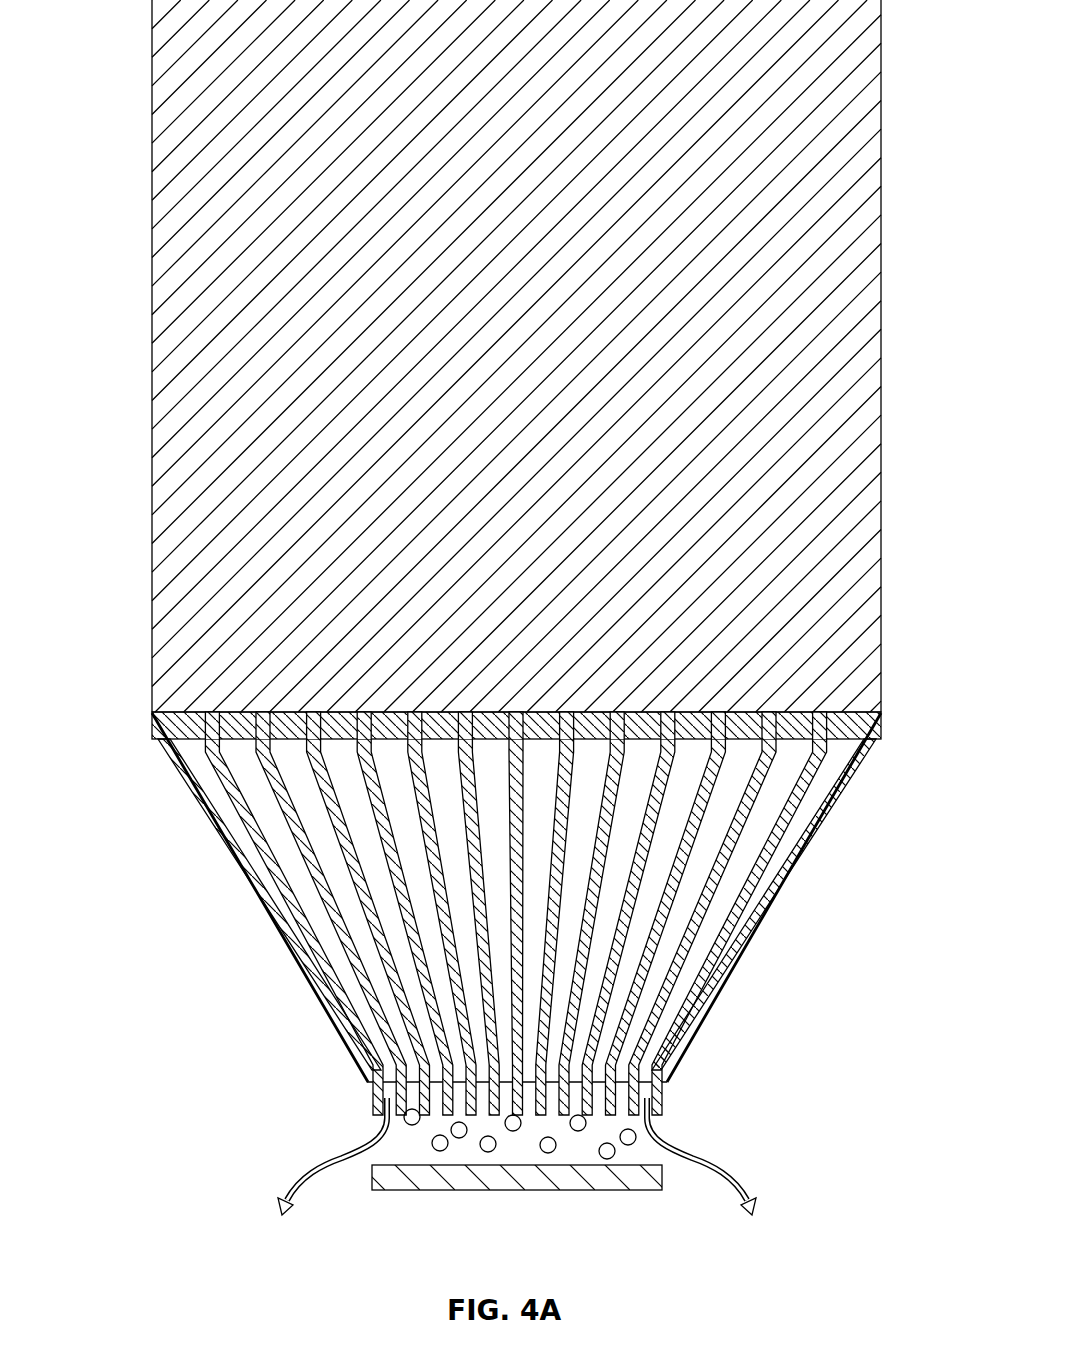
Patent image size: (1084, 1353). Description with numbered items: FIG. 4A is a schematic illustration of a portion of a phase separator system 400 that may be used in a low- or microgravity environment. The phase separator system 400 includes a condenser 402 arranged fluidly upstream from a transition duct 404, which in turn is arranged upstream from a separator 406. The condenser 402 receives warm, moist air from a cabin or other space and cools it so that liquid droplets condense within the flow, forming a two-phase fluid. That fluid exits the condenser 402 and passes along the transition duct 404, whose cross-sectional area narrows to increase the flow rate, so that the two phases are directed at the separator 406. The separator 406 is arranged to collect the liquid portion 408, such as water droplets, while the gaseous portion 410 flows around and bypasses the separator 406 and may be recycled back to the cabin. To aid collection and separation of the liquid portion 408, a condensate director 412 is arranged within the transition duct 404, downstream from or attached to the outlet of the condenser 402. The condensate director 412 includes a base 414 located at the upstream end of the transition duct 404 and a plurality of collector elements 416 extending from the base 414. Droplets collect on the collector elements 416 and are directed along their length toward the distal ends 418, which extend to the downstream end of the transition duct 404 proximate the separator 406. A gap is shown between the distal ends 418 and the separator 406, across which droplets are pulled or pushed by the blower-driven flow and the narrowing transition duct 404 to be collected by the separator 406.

The phase separator system 400 is at (506, 630).
The condenser 402 is at (876, 372).
The transition duct 404 is at (272, 927).
The separator 406 is at (525, 1190).
The liquid portion 408 is at (440, 1152).
The gaseous portion 410 is at (312, 1160).
The condensate director 412 is at (240, 847).
The base 414 is at (151, 720).
The collector elements 416 is at (742, 912).
The distal ends 418 is at (662, 1097).